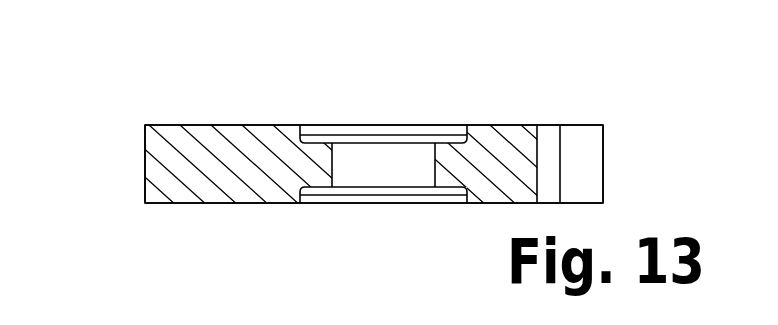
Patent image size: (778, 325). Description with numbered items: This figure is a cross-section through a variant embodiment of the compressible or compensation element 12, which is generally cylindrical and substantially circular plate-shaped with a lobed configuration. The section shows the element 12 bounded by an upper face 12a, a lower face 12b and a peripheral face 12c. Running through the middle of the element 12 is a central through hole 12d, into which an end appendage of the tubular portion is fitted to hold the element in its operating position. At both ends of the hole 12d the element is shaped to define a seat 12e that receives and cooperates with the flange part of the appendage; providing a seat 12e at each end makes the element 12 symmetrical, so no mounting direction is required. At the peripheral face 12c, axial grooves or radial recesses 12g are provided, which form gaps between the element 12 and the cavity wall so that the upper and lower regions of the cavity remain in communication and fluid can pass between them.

The compensation element 12 is at (206, 93).
The upper face 12a is at (165, 125).
The lower face 12b is at (180, 204).
The peripheral face 12c is at (145, 168).
The central through hole 12d is at (334, 160).
The seat 12e is at (458, 130).
The axial grooves or radial recesses 12g is at (548, 160).